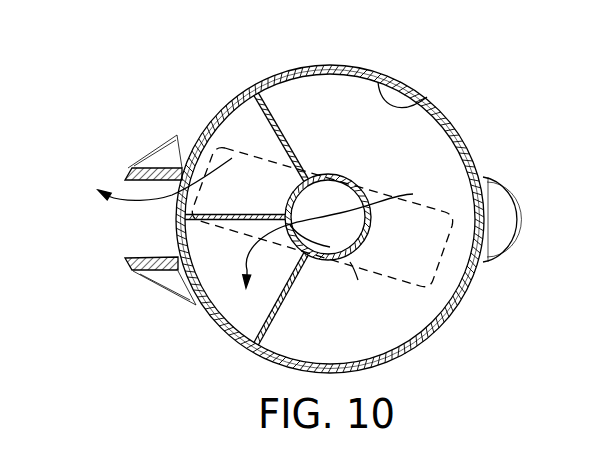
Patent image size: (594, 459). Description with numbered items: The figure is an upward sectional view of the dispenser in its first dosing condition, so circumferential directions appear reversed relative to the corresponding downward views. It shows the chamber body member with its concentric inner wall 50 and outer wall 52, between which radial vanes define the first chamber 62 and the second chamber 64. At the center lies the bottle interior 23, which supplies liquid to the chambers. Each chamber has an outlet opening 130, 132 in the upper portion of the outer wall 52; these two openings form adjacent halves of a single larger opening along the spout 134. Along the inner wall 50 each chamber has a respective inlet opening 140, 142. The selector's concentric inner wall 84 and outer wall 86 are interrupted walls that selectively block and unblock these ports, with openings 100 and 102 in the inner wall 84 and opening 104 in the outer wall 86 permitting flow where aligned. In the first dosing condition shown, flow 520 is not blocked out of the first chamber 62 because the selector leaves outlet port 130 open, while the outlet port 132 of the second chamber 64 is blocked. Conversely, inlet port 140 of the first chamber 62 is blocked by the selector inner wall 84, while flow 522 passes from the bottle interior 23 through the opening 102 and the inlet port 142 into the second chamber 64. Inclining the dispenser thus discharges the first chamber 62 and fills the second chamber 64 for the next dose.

The interior 23 is at (358, 229).
The inner wall 50 is at (358, 280).
The outer wall 52 is at (432, 326).
The first chamber 62 is at (248, 124).
The second chamber 64 is at (248, 306).
The inner wall 84 is at (360, 192).
The outer wall 86 is at (425, 100).
The opening 100 is at (344, 233).
The opening 102 is at (330, 247).
The opening 104 is at (174, 142).
The outlet opening 130 is at (170, 204).
The outlet opening 132 is at (168, 240).
The spout 134 is at (153, 286).
The inlet opening 140 is at (288, 196).
The inlet opening 142 is at (290, 276).
The flow 520 is at (125, 200).
The flow 522 is at (208, 311).